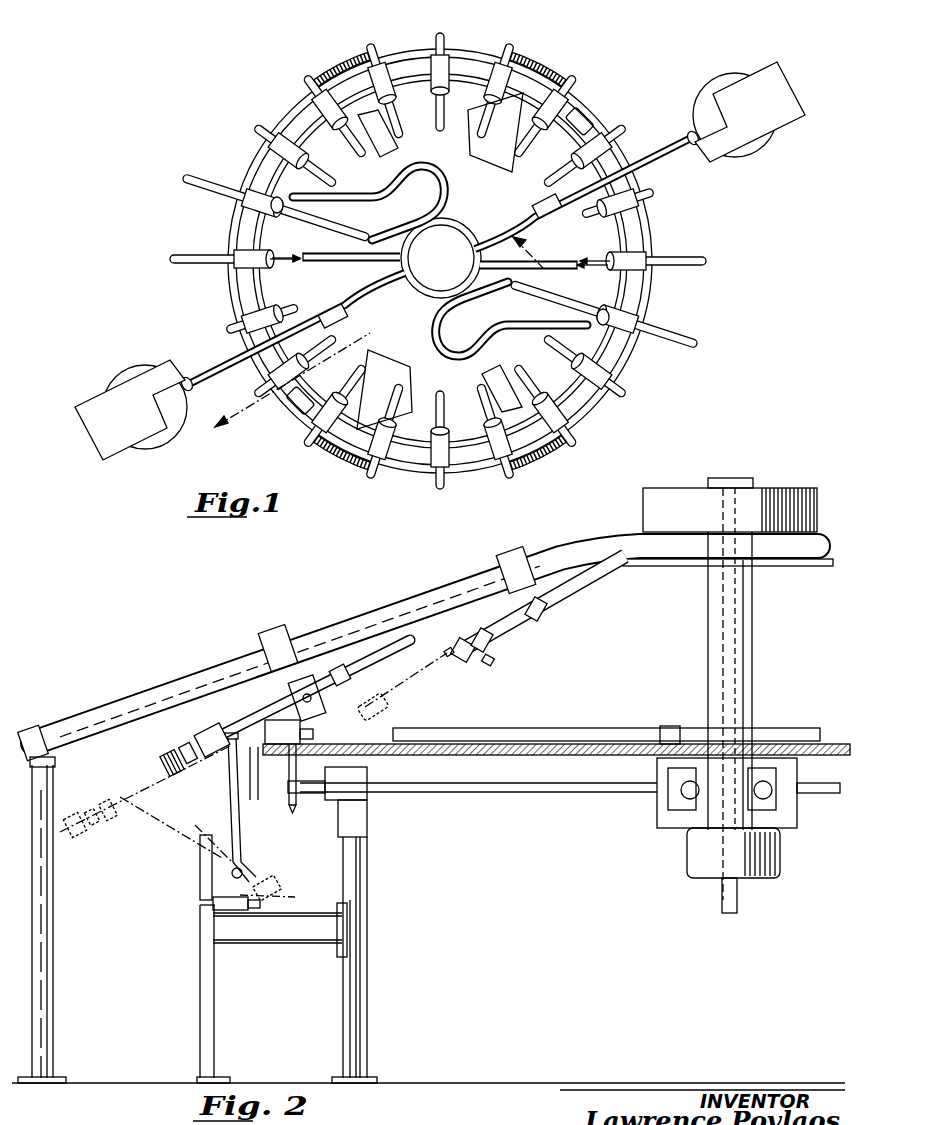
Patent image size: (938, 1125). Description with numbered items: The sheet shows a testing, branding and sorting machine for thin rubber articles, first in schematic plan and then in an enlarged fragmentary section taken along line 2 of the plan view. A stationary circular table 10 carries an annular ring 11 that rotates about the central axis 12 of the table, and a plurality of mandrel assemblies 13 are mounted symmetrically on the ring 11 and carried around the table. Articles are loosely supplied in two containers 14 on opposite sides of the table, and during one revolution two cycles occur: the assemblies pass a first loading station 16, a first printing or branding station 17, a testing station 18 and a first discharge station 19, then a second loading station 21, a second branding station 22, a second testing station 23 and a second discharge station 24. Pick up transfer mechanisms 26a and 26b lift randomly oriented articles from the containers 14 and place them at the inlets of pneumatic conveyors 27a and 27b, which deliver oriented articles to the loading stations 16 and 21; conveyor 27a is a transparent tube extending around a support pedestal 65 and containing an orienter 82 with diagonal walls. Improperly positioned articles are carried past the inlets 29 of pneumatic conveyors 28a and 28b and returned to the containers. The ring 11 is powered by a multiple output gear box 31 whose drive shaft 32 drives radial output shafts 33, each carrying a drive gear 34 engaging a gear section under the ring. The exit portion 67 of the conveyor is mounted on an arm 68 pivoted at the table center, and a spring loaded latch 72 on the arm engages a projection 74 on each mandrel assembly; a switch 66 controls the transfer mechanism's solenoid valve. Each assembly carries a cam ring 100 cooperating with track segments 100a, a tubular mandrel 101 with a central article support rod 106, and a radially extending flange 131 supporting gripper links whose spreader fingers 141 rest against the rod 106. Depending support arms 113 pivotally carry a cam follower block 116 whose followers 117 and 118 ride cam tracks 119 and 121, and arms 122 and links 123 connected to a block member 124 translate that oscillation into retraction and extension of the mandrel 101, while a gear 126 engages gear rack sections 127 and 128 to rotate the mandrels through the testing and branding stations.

In FIG. 1, the section line 2— 2 is at (384, 353).
In FIG. 1, the stationary circular table 10 is at (310, 118).
In FIG. 2, the stationary circular table 10 is at (598, 728).
In FIG. 1, the annular ring 11 is at (236, 222).
In FIG. 2, the annular ring 11 is at (282, 760).
In FIG. 1, the central axis 12 is at (438, 266).
In FIG. 2, the central axis 12 is at (730, 694).
In FIG. 1, the mandrel assemblies 13 is at (490, 48).
In FIG. 2, the mandrel assemblies 13 is at (246, 708).
In FIG. 1, the containers 14 is at (142, 448).
In FIG. 1, the first loading station 16 is at (300, 260).
In FIG. 2, the first loading station 16 is at (448, 660).
In FIG. 1, the first printing or branding station 17 is at (392, 150).
In FIG. 1, the testing station 18 is at (490, 160).
In FIG. 1, the first discharge station 19 is at (532, 200).
In FIG. 1, the second loading station 21 is at (596, 262).
In FIG. 1, the second printing or branding station 22 is at (498, 352).
In FIG. 1, the second testing station 23 is at (405, 390).
In FIG. 1, the second discharge station 24 is at (355, 298).
In FIG. 1, the pick up transfer mechanism 26a is at (103, 384).
In FIG. 1, the pick up transfer mechanism 26b is at (781, 142).
In FIG. 1, the pneumatic conveyor 27a is at (200, 380).
In FIG. 2, the pneumatic conveyor 27a is at (162, 690).
In FIG. 1, the pneumatic conveyor 27b is at (652, 145).
In FIG. 1, the pneumatic conveyor 28a is at (404, 194).
In FIG. 1, the pneumatic conveyor 28b is at (480, 310).
In FIG. 1, the inlets 29 is at (304, 222).
In FIG. 2, the multiple output gear box 31 is at (675, 830).
In FIG. 2, the drive shaft 32 is at (740, 896).
In FIG. 2, the output shafts 33 is at (515, 792).
In FIG. 2, the drive gear 34 is at (296, 808).
In FIG. 1, the support pedestal 65 is at (400, 274).
In FIG. 2, the support pedestal 65 is at (795, 492).
In FIG. 2, the switch 66 is at (672, 725).
In FIG. 2, the exit portion 67 is at (508, 632).
In FIG. 2, the arm 68 is at (562, 727).
In FIG. 2, the spring loaded latch 72 is at (415, 755).
In FIG. 2, the projection 74 is at (316, 714).
In FIG. 2, the orienter 82 is at (306, 625).
In FIG. 2, the cam ring 100 is at (212, 760).
In FIG. 1, the track segments 100a is at (580, 112).
In FIG. 2, the tubular mandrel 101 is at (390, 622).
In FIG. 2, the article support rod 106 is at (424, 680).
In FIG. 2, the depending support arms 113 is at (252, 800).
In FIG. 2, the cam follower block 116 is at (250, 874).
In FIG. 2, the cam follower 117 is at (200, 870).
In FIG. 2, the cam follower 118 is at (288, 888).
In FIG. 2, the cam track 119 is at (196, 840).
In FIG. 2, the cam track 121 is at (222, 912).
In FIG. 2, the arms 122 is at (232, 810).
In FIG. 2, the links 123 is at (222, 732).
In FIG. 2, the block member 124 is at (186, 746).
In FIG. 2, the gear 126 is at (164, 760).
In FIG. 1, the gear rack section 127 is at (340, 60).
In FIG. 1, the gear rack section 128 is at (538, 65).
In FIG. 2, the radially extending flange 131 is at (276, 628).
In FIG. 2, the spreader finger 141 is at (336, 640).